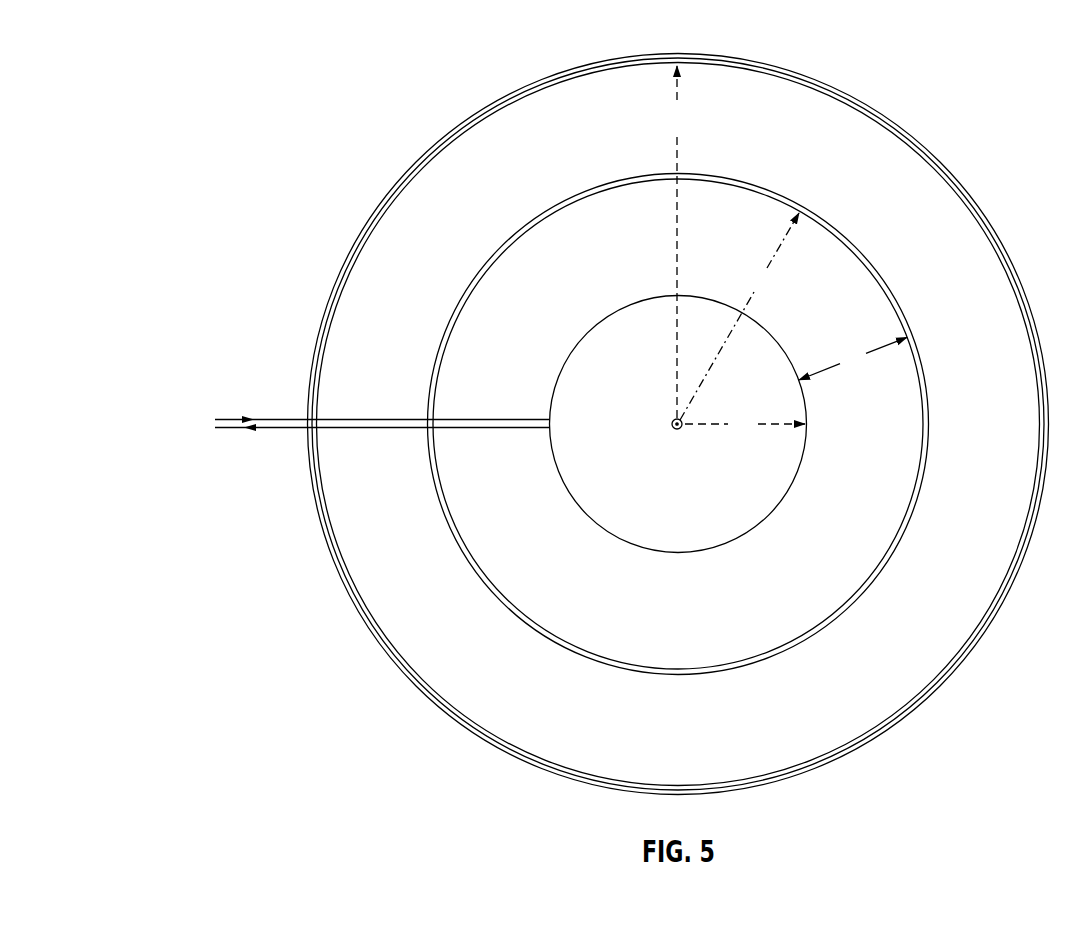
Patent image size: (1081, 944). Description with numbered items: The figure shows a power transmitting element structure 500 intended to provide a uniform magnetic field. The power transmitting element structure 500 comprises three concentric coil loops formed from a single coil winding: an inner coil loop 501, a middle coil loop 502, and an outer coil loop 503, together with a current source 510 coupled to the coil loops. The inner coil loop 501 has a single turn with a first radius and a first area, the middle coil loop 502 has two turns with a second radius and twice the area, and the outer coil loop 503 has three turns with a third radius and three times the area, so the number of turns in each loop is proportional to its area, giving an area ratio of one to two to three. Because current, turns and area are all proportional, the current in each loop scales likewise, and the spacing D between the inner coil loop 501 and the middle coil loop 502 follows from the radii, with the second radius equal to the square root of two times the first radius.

The power transmitting element structure 500 is at (278, 60).
The inner coil loop 501 is at (758, 322).
The middle coil loop 502 is at (828, 220).
The outer coil loop 503 is at (897, 122).
The current source 510 is at (278, 418).